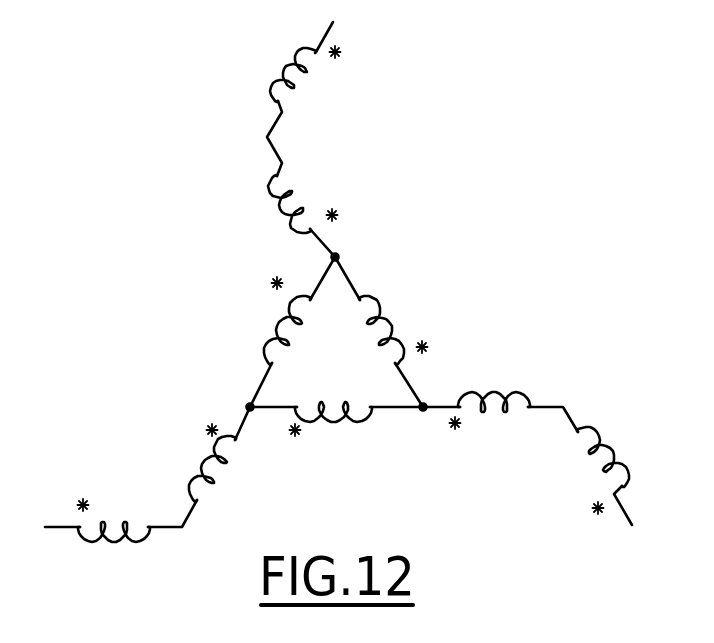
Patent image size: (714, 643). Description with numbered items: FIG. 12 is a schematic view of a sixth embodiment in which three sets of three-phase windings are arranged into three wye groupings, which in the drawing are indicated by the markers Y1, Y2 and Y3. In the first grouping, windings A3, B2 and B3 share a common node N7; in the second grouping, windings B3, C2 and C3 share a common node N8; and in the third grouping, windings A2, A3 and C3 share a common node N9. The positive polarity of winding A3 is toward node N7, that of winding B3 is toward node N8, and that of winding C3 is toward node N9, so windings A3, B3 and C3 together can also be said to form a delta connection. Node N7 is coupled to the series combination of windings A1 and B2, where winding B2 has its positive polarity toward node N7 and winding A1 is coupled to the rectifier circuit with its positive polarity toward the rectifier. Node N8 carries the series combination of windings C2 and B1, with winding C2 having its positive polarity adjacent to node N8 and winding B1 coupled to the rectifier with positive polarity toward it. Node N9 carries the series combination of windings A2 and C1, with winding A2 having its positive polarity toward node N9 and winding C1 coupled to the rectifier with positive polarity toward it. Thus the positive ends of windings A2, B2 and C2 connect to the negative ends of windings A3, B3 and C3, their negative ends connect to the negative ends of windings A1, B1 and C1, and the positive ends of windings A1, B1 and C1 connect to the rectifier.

The winding A1 is at (305, 76).
The winding A2 is at (205, 463).
The winding A3 is at (277, 321).
The winding B1 is at (589, 470).
The winding B2 is at (303, 203).
The winding B3 is at (393, 330).
The winding C1 is at (114, 540).
The winding C2 is at (490, 422).
The winding C3 is at (331, 429).
The node N7 is at (352, 246).
The node N8 is at (435, 393).
The node N9 is at (233, 394).
The phase winding set Y1'''' Y1 is at (389, 204).
The phase winding set Y2'''' Y2 is at (489, 353).
The phase winding set Y3'''' Y3 is at (207, 355).